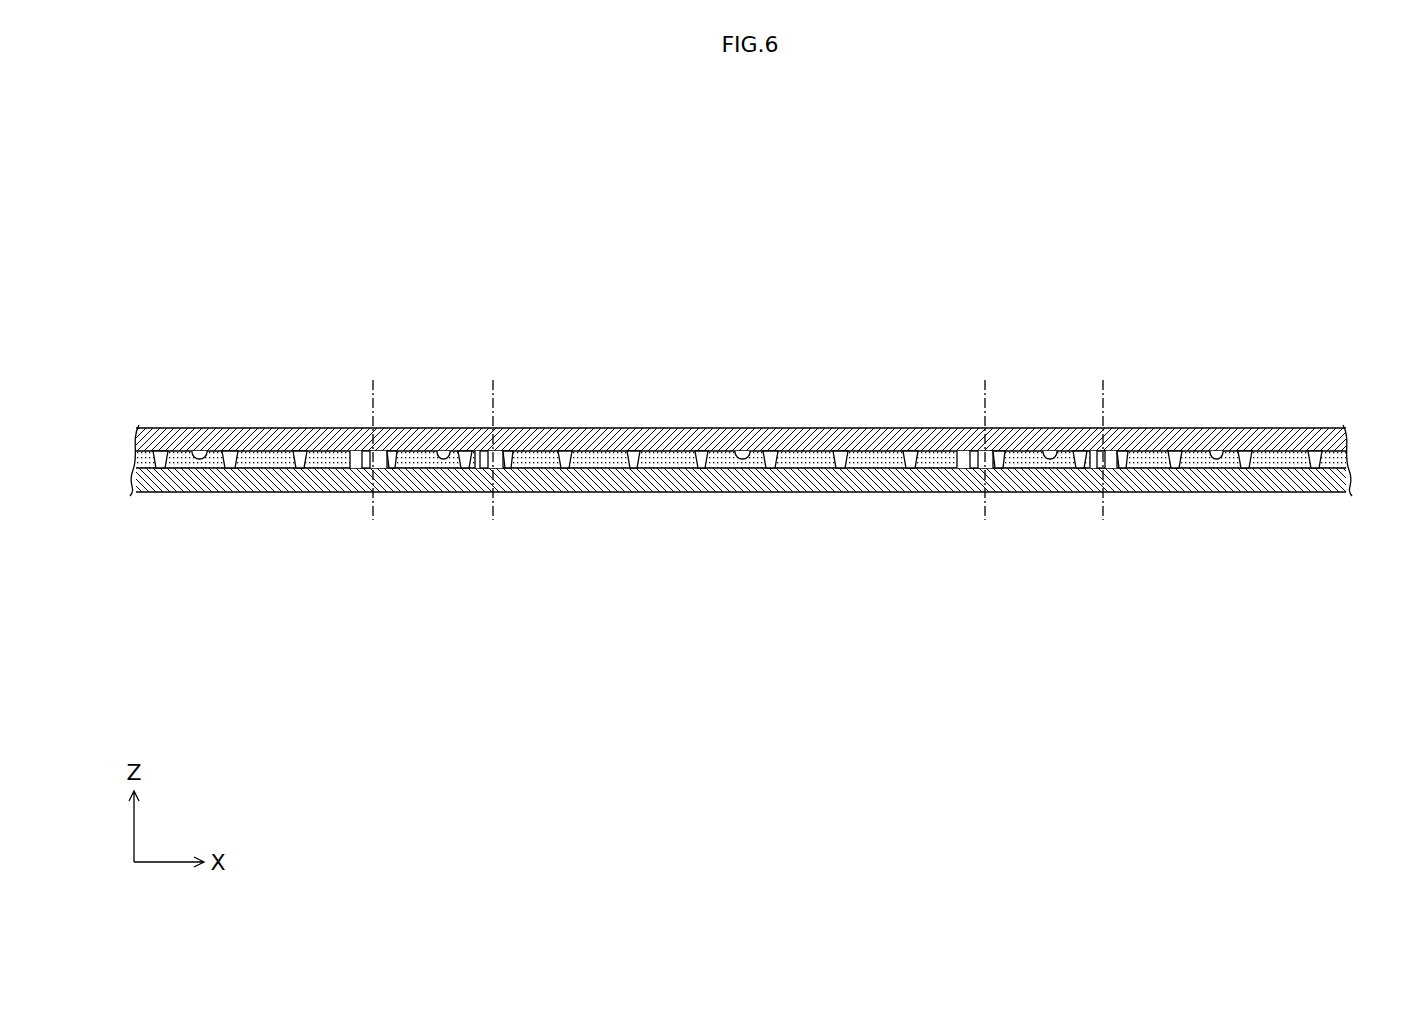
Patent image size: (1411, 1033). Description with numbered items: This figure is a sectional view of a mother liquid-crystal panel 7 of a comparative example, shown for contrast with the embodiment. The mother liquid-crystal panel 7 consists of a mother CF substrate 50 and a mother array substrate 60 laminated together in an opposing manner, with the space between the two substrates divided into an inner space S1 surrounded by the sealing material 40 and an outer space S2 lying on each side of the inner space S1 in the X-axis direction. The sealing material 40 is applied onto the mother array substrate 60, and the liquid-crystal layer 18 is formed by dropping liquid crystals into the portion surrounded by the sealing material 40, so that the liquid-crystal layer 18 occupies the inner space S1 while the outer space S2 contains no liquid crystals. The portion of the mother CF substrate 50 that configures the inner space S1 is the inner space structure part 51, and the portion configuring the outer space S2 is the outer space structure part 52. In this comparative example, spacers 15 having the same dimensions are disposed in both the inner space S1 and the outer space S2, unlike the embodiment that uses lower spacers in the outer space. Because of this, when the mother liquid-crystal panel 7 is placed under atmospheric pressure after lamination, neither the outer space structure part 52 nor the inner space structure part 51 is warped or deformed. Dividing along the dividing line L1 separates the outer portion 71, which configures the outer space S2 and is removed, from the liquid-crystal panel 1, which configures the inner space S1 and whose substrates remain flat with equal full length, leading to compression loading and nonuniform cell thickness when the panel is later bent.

The mother liquid-crystal panel 7 is at (238, 262).
The mother CF substrate 50 is at (1314, 448).
The mother array substrate 60 is at (1334, 486).
The inner space structure part 51 is at (157, 440).
The outer space structure part 52 is at (419, 437).
The inner space S1 is at (201, 452).
The outer space S2 is at (445, 450).
The liquid-crystal layer 18 is at (266, 464).
The spacers 15 is at (462, 457).
The sealing material 40 is at (353, 462).
The outer portion 71 is at (407, 509).
The dividing line L1 is at (358, 490).
The liquid-crystal panel 1 is at (234, 509).